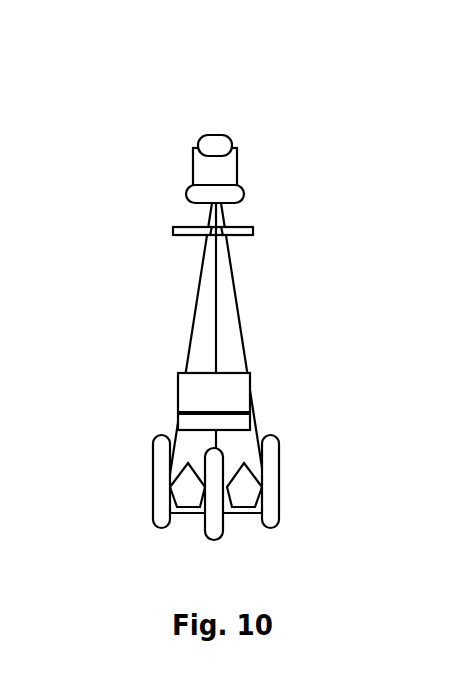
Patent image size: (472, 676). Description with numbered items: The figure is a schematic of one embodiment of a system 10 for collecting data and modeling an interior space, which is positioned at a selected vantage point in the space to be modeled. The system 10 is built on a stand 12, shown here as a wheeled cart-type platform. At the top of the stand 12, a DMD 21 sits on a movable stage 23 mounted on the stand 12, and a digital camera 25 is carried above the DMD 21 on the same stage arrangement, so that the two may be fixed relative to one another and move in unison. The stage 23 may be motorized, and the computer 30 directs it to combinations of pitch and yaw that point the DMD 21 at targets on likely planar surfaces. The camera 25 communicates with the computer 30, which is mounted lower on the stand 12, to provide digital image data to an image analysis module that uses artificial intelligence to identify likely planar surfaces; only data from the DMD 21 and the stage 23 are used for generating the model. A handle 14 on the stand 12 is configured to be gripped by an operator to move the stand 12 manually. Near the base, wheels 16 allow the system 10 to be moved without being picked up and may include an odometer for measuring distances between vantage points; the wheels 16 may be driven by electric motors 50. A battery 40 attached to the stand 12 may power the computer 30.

The system 10 is at (328, 98).
The stand 12 is at (241, 318).
The handle 14 is at (257, 231).
The wheels 16 is at (281, 478).
The DMD 21 is at (241, 163).
The movable stage 23 is at (186, 195).
The digital camera 25 is at (199, 140).
The computer 30 is at (177, 393).
The battery 40 is at (252, 423).
The electric motors 50 is at (181, 487).